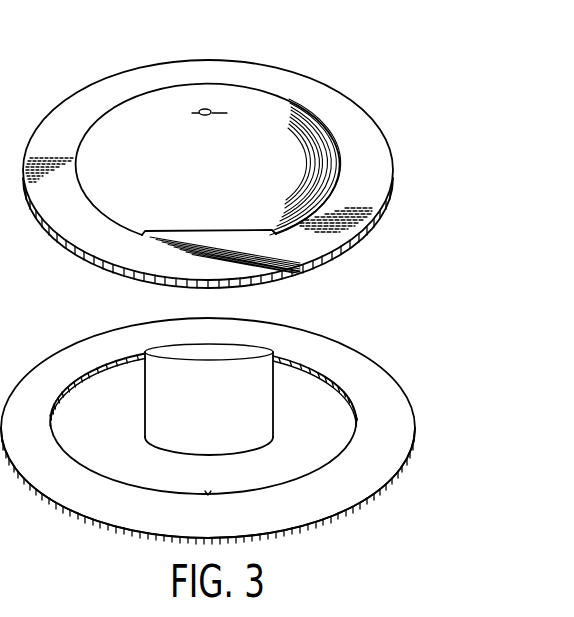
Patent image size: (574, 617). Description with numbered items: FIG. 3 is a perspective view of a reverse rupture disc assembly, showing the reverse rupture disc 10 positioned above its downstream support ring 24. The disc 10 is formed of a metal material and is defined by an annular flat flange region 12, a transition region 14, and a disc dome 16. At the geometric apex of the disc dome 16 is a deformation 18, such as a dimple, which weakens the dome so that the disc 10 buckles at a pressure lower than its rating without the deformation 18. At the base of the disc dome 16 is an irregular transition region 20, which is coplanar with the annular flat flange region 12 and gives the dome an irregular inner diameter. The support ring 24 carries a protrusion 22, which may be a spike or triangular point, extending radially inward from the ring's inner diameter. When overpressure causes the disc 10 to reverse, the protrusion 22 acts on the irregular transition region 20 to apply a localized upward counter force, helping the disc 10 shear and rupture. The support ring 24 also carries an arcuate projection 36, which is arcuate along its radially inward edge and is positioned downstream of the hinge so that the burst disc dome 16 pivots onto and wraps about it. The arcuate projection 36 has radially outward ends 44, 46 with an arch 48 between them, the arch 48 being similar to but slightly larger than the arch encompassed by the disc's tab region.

The reverse rupture disc 10 is at (312, 55).
The annular flat flange region 12 is at (355, 203).
The transition region 14 is at (335, 155).
The disc dome 16 is at (298, 115).
The deformation 18 is at (205, 110).
The irregular transition region 20 is at (263, 240).
The protrusion 22 is at (208, 492).
The support ring 24 is at (390, 430).
The arcuate projection 36 is at (179, 375).
The radially outward end of arcuate projection 44 is at (152, 387).
The radially outward end of arcuate projection 46 is at (267, 405).
The arch 48 is at (203, 404).